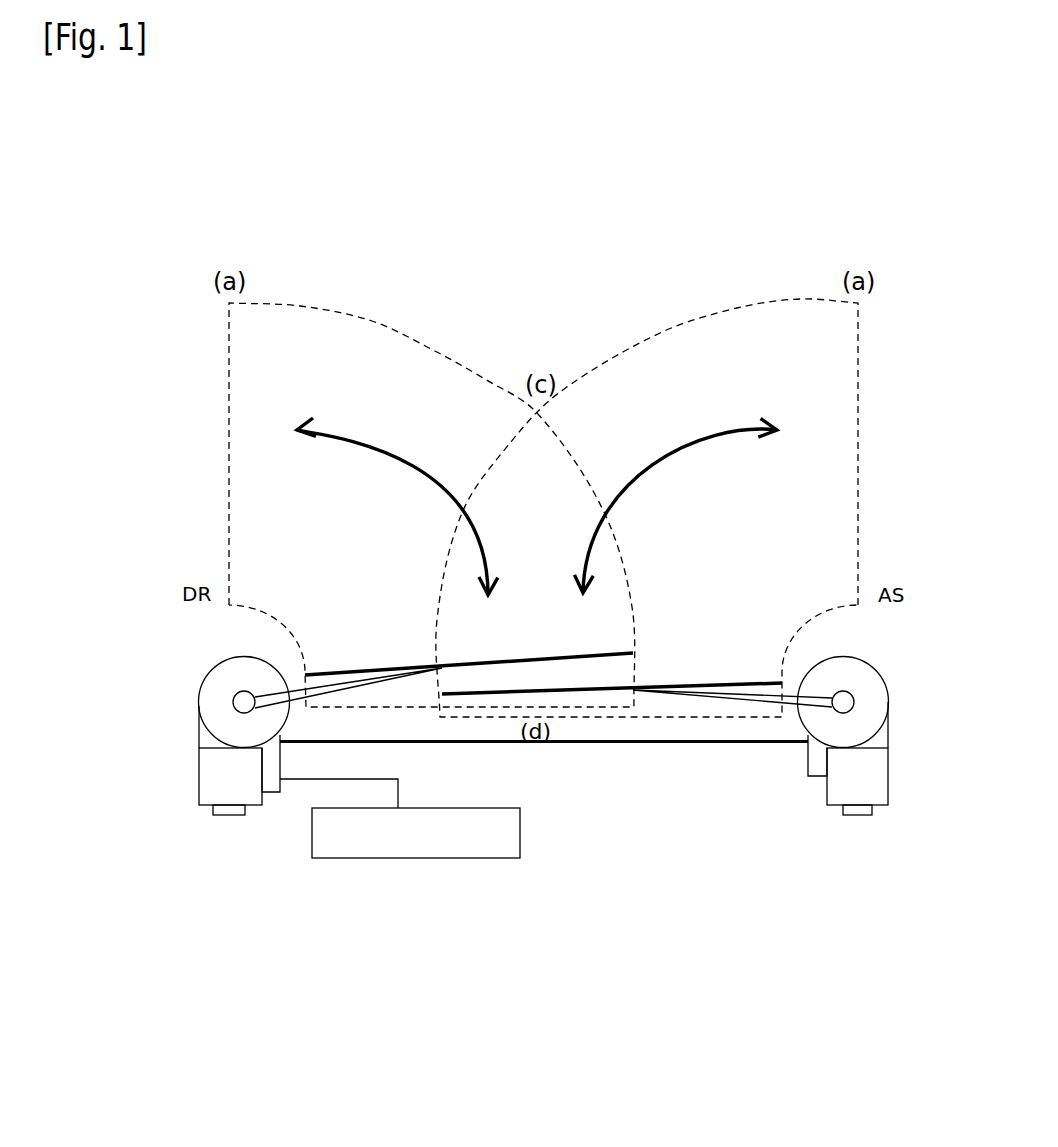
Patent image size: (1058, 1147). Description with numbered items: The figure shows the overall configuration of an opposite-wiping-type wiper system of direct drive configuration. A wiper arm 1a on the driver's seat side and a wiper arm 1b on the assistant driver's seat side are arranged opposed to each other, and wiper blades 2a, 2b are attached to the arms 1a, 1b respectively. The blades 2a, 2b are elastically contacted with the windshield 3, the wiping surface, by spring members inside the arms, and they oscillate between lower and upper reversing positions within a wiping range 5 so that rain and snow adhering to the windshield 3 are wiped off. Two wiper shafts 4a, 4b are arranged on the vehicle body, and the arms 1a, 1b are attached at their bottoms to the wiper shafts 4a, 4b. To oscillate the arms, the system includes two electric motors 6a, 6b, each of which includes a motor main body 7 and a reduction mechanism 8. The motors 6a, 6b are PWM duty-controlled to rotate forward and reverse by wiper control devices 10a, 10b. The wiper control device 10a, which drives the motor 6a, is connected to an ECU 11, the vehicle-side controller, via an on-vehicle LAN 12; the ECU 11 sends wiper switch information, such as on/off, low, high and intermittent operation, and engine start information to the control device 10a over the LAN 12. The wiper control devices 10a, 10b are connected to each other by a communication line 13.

The wiper arm 1a is at (377, 683).
The wiper arm 1b is at (713, 700).
The wiper blade 2a is at (525, 658).
The wiper blade 2b is at (583, 690).
The windshield 3 is at (597, 298).
The wiper shaft 4a is at (233, 698).
The wiper shaft 4b is at (853, 700).
The wiping range 5 is at (372, 320).
The electric motor 6a is at (218, 795).
The electric motor 6b is at (868, 795).
The motor main body 7 is at (198, 782).
The reduction mechanism 8 is at (220, 680).
The wiper control device 10a is at (270, 778).
The wiper control device 10b is at (815, 758).
The ECU 11 is at (500, 860).
The on-vehicle LAN 12 is at (300, 779).
The communication line 13 is at (628, 743).